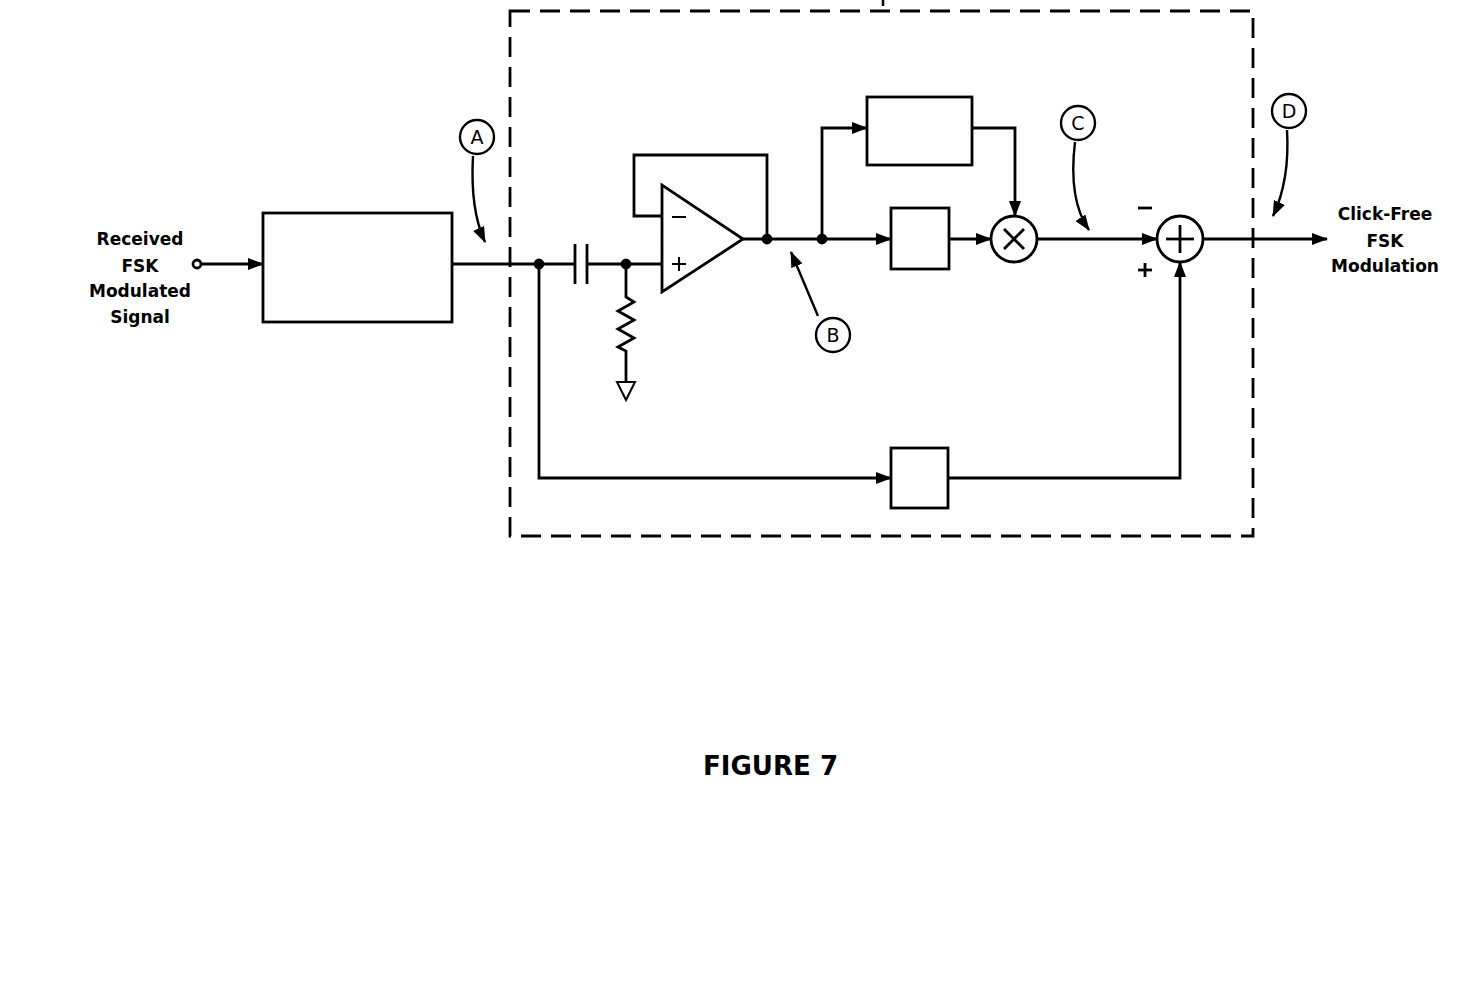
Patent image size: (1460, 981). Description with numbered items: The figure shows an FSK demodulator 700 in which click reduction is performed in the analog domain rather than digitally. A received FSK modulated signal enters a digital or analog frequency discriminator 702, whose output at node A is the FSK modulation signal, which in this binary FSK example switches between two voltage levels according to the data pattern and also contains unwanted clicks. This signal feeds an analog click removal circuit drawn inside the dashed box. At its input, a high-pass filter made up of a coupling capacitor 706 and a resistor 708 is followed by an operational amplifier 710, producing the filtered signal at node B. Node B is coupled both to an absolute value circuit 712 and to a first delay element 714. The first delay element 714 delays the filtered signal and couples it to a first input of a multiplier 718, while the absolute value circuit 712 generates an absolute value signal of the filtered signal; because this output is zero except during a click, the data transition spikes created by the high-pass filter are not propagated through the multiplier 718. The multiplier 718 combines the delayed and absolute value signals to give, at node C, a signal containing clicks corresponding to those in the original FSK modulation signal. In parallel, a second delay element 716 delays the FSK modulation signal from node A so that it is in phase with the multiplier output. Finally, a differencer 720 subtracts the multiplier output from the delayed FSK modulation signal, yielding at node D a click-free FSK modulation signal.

The FSK demodulator 700 is at (352, 622).
The frequency discriminator 702 is at (360, 204).
The coupling capacitor 706 is at (581, 233).
The resistor 708 is at (648, 323).
The operational amplifier 710 is at (709, 272).
The absolute value (ABS) circuit 712 is at (917, 88).
The first delay element 714 is at (920, 275).
The second delay element 716 is at (920, 440).
The multiplier 718 is at (1014, 265).
The differencer 720 is at (1181, 205).